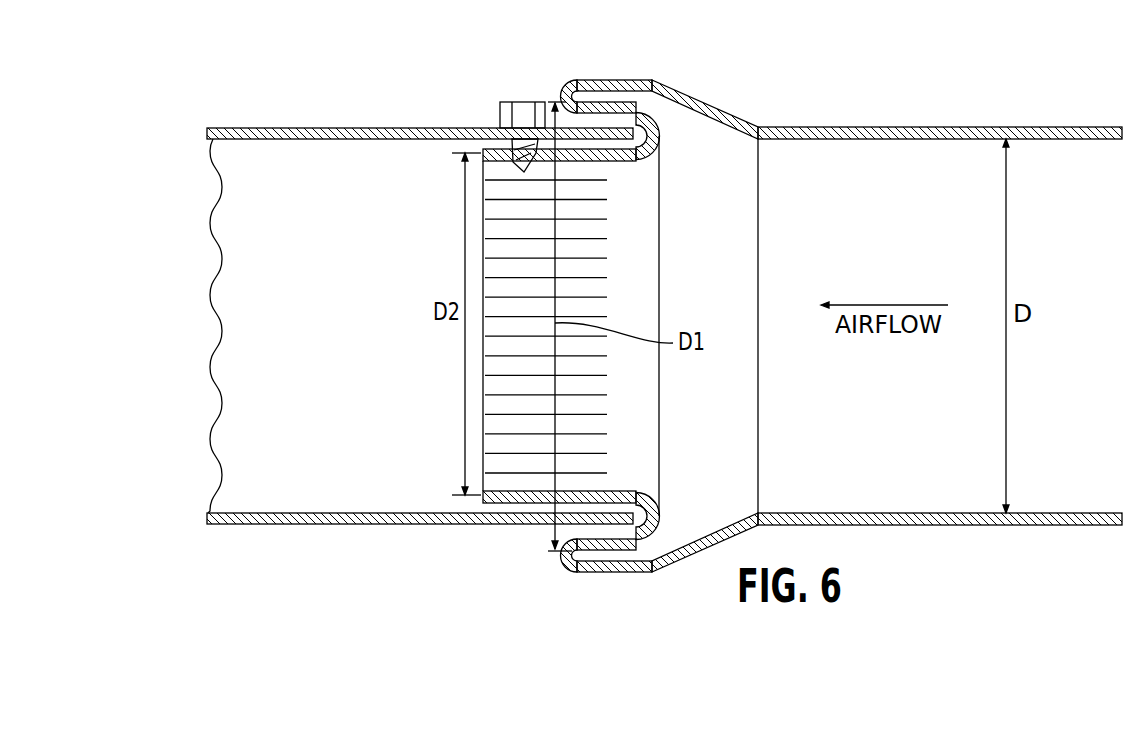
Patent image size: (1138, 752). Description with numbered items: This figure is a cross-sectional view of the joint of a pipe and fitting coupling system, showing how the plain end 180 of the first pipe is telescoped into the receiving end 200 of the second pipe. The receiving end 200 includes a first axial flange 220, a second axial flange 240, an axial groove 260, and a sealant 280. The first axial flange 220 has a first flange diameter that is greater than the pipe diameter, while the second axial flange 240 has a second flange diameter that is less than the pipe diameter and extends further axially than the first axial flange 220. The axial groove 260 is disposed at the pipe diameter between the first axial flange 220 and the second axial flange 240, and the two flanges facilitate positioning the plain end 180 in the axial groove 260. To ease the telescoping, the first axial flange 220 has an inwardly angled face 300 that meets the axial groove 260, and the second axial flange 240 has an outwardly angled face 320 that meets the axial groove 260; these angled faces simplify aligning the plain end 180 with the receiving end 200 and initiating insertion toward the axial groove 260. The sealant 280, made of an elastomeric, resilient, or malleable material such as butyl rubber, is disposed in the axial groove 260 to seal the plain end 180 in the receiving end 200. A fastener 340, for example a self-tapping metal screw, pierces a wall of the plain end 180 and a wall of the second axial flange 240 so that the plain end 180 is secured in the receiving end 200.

The plain end 180 is at (468, 118).
The receiving end 200 is at (697, 72).
The first axial flange 220 is at (563, 83).
The second axial flange 240 is at (461, 163).
The axial groove 260 is at (663, 132).
The sealant 280 is at (632, 116).
The inwardly angled face 300 is at (596, 108).
The outwardly angled face 320 is at (597, 163).
The fastener 340 is at (500, 100).